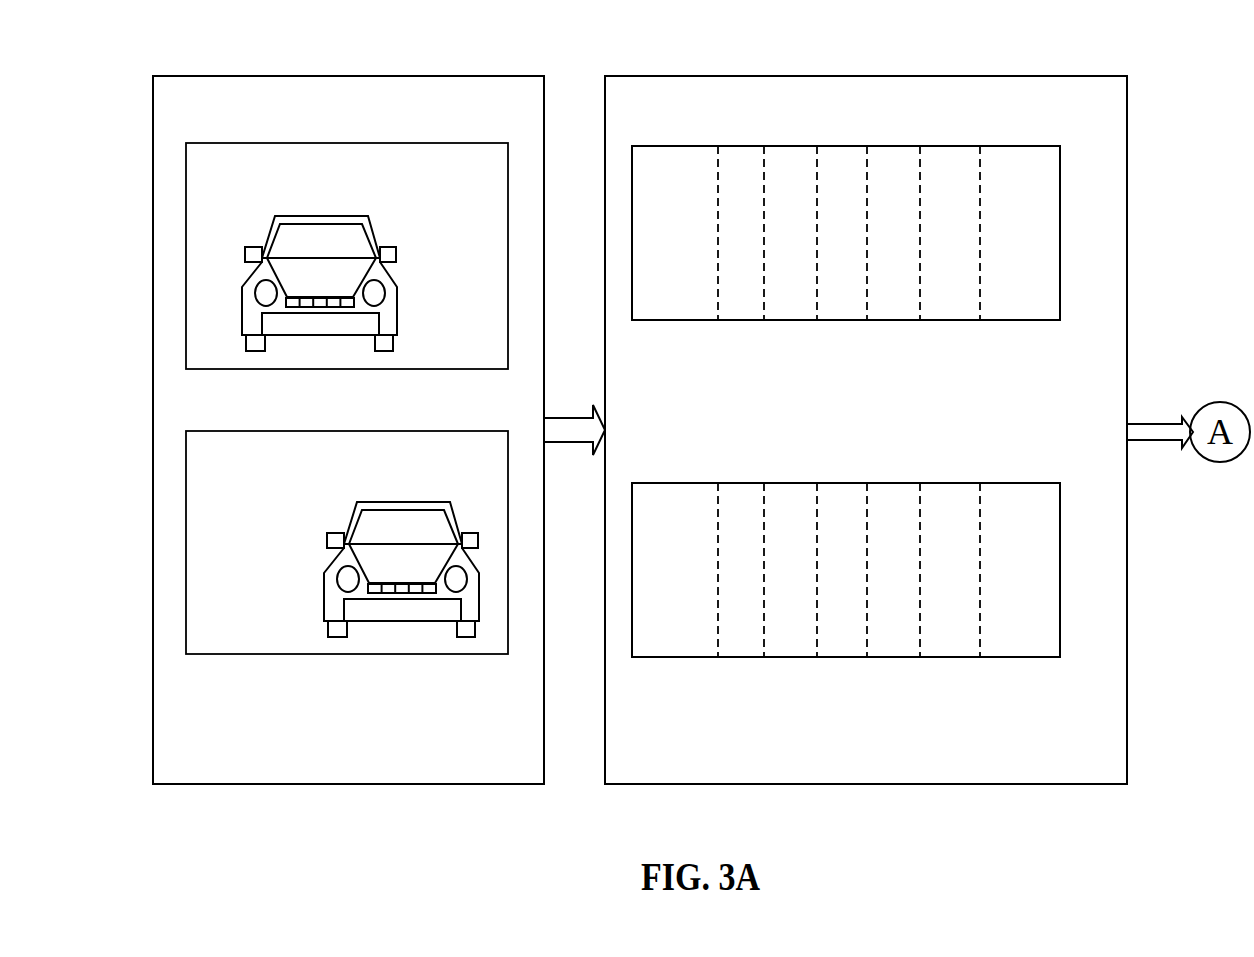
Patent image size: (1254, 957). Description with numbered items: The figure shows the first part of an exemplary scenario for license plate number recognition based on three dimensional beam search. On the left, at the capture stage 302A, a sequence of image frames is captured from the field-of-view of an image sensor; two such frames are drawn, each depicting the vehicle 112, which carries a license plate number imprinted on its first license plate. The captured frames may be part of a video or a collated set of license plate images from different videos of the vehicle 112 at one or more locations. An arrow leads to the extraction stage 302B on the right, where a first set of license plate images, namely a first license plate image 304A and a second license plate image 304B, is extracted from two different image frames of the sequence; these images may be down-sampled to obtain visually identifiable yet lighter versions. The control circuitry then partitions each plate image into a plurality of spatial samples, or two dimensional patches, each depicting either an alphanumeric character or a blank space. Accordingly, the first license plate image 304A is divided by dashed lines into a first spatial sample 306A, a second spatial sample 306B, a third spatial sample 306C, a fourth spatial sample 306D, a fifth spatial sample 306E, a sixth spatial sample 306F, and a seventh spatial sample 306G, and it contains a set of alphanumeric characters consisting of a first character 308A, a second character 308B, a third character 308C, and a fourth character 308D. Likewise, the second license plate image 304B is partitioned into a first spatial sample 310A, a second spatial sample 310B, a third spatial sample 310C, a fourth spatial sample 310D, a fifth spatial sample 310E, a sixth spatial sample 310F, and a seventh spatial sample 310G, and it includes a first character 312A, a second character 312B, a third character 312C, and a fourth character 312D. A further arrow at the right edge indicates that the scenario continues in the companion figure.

The vehicle 112 is at (305, 216).
The capture of a sequence of image frames 302A is at (317, 75).
The extraction of a first set of license plate images 302B is at (636, 75).
The first license plate image 304A is at (1060, 145).
The second license plate image 304B is at (878, 544).
The first spatial sample 306A is at (669, 154).
The second spatial sample 306B is at (731, 154).
The third spatial sample 306C is at (802, 155).
The fourth spatial sample 306D is at (847, 157).
The fifth spatial sample 306E is at (913, 155).
The sixth spatial sample 306F is at (975, 155).
The seventh spatial sample 306G is at (1050, 202).
The first character 308A is at (703, 255).
The second character 308B is at (802, 255).
The third character 308C is at (897, 252).
The fourth character 308D is at (1002, 255).
The first spatial sample 310A is at (664, 553).
The second spatial sample 310B is at (703, 553).
The third spatial sample 310C is at (798, 552).
The fourth spatial sample 310D is at (856, 552).
The fifth spatial sample 310E is at (914, 550).
The sixth spatial sample 310F is at (972, 550).
The seventh spatial sample 310G is at (1050, 569).
The first character 312A is at (679, 613).
The second character 312B is at (787, 612).
The third character 312C is at (883, 612).
The fourth character 312D is at (1017, 613).